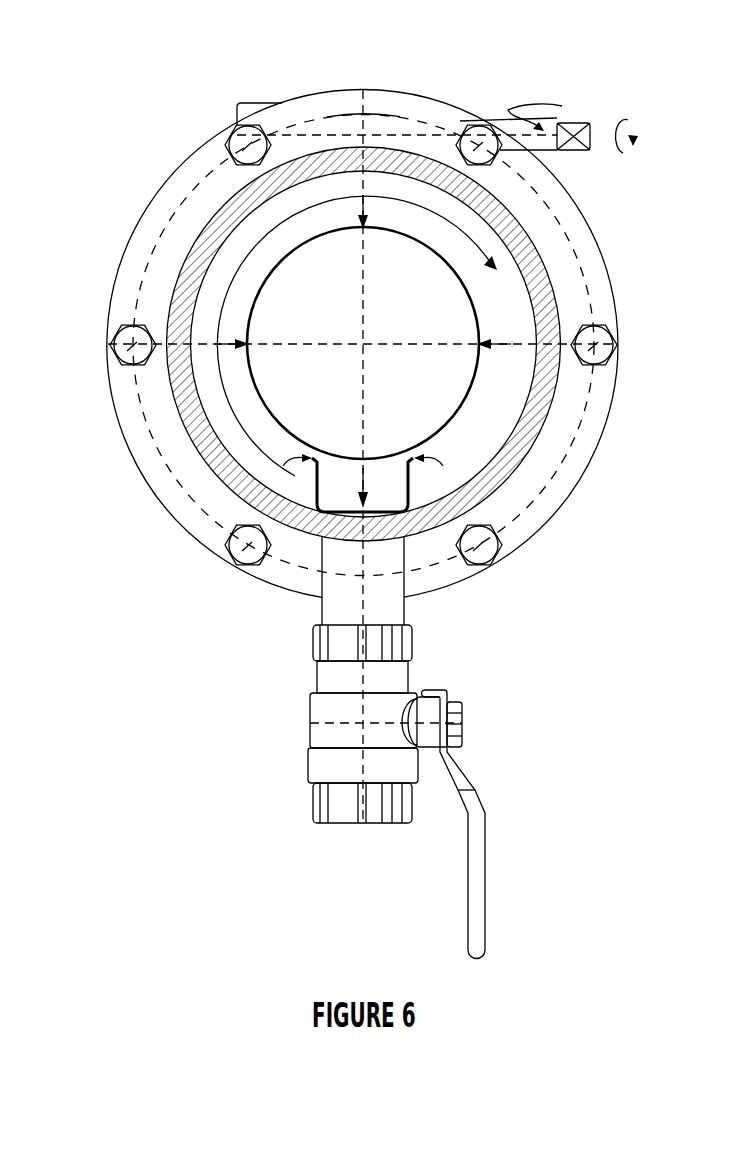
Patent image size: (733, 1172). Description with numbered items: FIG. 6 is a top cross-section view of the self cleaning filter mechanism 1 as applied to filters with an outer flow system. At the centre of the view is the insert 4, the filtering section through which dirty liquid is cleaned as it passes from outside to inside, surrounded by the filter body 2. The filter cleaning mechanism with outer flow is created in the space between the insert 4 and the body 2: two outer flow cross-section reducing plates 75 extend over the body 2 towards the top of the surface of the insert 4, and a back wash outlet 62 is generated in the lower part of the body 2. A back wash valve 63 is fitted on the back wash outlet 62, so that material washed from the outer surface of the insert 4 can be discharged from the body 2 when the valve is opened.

The self cleaning filter mechanism 1 is at (331, 301).
The body 2 is at (412, 344).
The insert 4 is at (284, 335).
The back wash outlet 62 is at (270, 586).
The back wash valve 63 is at (310, 792).
The outer flow cross-section reducing plates 75 is at (481, 516).